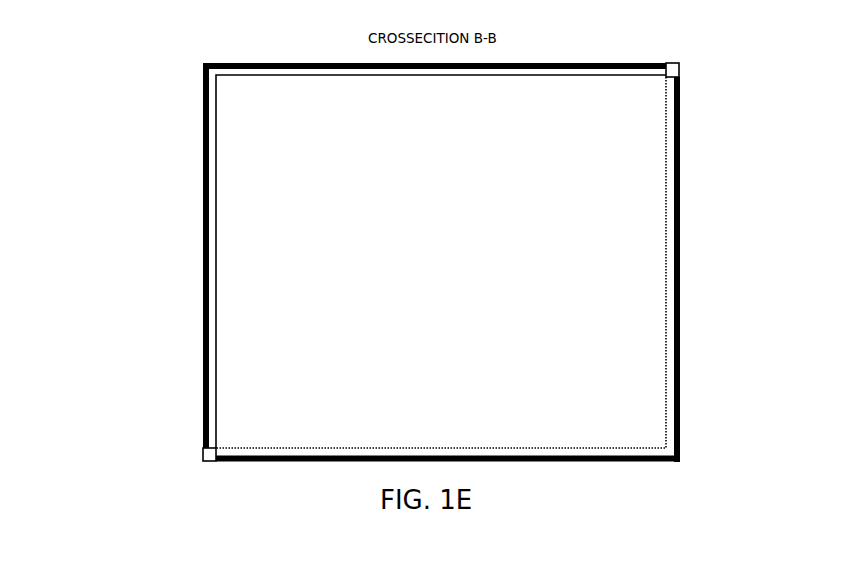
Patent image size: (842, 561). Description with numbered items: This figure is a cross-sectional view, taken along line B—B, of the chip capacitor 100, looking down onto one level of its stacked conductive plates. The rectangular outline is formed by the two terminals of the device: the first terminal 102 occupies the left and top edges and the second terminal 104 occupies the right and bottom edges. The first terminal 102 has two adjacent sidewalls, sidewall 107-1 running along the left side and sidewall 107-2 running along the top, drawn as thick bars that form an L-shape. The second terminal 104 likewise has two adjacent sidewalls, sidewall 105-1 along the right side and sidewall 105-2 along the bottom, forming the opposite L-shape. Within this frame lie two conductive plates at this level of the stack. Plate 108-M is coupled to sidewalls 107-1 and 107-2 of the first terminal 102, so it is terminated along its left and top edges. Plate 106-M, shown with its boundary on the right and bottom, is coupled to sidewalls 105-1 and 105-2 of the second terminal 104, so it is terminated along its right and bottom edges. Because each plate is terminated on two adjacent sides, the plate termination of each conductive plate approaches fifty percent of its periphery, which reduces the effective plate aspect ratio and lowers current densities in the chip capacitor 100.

The chip capacitor 100 is at (730, 73).
The first terminal 102 is at (194, 351).
The second terminal 104 is at (690, 385).
The sidewall 105-1 is at (680, 214).
The sidewall 105-2 is at (600, 466).
The plate 106-M is at (620, 265).
The sidewall 107-1 is at (203, 143).
The sidewall 107-2 is at (342, 63).
The plate 108-M is at (203, 203).